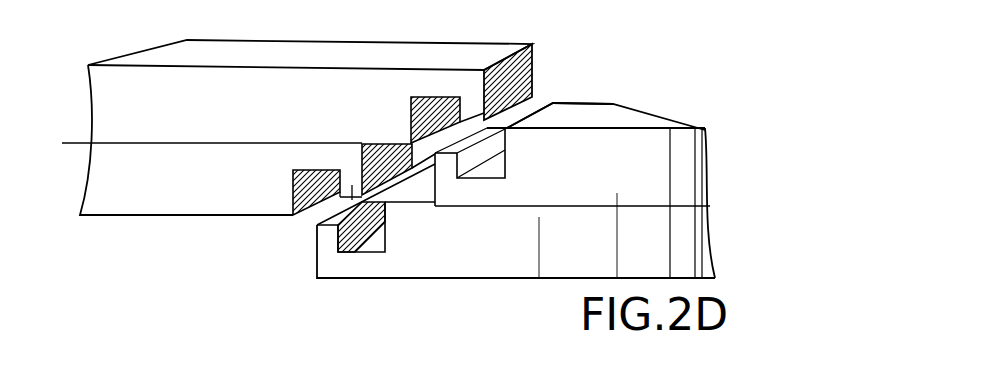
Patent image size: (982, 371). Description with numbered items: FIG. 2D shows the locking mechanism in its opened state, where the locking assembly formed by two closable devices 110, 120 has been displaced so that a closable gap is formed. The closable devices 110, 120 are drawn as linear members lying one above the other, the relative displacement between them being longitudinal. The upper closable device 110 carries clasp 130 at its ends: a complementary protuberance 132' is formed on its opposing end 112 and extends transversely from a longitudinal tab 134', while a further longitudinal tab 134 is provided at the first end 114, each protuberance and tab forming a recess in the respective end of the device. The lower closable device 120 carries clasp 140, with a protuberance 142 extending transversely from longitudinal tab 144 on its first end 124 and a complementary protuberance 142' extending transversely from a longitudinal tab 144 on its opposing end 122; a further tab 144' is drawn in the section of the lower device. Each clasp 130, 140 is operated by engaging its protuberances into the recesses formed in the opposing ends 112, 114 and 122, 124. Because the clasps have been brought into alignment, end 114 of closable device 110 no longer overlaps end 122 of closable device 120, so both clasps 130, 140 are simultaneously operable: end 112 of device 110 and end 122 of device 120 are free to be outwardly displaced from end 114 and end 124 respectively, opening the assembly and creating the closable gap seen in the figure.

The closable device 110 is at (716, 165).
The opposing end of closable device 112 is at (523, 78).
The first end of closable device 114 is at (437, 192).
The closable device 120 is at (700, 252).
The opposing end of closable device 122 is at (362, 163).
The first end of closable device 124 is at (317, 263).
The clasp 130 is at (663, 62).
The complementary protuberance 132' is at (522, 118).
The longitudinal tab 134 is at (510, 153).
The longitudinal tab 134' is at (398, 109).
The clasp 140 is at (193, 240).
The protuberance 142 is at (325, 211).
The complementary protuberance 142' is at (396, 227).
The longitudinal tab 144 is at (394, 238).
The rib of first connector body (cross-section) 144' is at (270, 192).